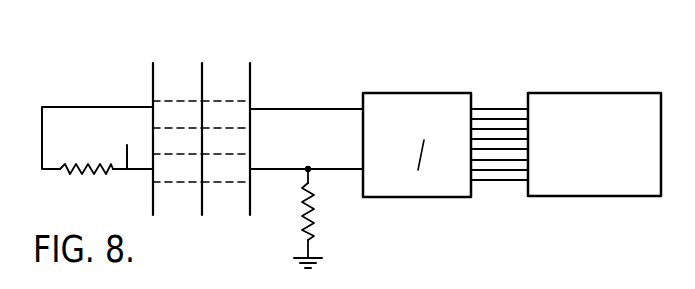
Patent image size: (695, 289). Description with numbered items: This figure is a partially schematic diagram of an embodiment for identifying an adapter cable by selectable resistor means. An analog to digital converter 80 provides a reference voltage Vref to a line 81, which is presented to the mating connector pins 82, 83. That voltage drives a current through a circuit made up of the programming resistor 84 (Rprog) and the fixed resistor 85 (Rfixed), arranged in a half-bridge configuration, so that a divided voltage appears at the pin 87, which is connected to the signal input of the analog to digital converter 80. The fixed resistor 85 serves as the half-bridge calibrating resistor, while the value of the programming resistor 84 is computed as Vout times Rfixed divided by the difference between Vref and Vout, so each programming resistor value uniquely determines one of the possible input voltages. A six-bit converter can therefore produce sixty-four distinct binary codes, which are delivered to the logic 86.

The analog to digital converter 80 is at (446, 190).
The line 81 is at (311, 109).
The mating connector pin 82 is at (227, 66).
The mating connector pin 83 is at (173, 76).
The resistor (Rprog) 84 is at (90, 170).
The resistor (Rfixed) 85 is at (315, 215).
The logic 86 is at (618, 168).
The pin 87 is at (127, 145).